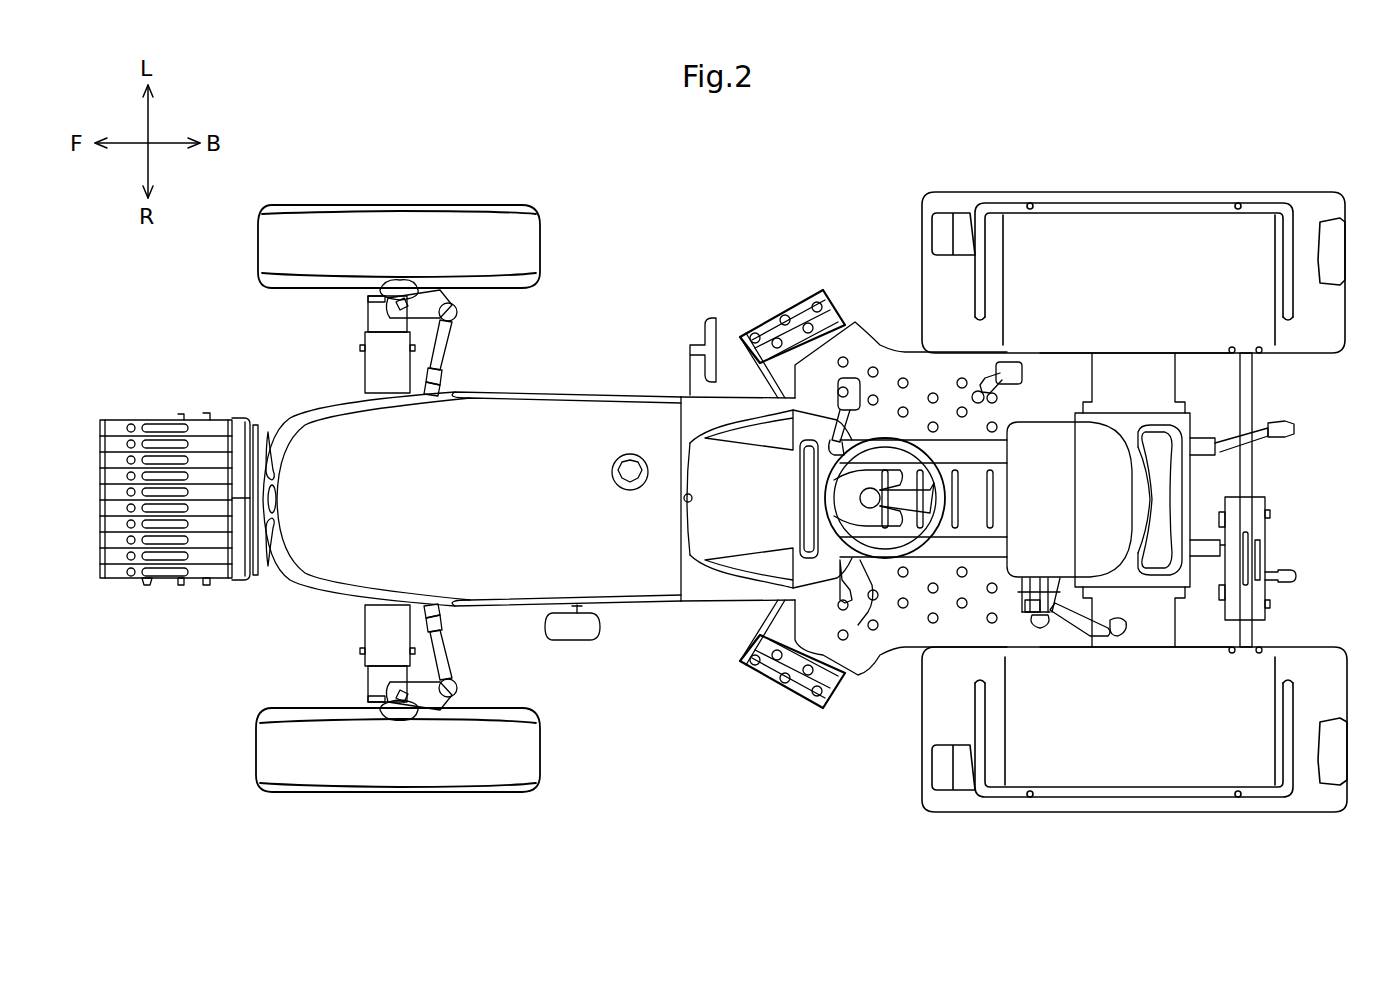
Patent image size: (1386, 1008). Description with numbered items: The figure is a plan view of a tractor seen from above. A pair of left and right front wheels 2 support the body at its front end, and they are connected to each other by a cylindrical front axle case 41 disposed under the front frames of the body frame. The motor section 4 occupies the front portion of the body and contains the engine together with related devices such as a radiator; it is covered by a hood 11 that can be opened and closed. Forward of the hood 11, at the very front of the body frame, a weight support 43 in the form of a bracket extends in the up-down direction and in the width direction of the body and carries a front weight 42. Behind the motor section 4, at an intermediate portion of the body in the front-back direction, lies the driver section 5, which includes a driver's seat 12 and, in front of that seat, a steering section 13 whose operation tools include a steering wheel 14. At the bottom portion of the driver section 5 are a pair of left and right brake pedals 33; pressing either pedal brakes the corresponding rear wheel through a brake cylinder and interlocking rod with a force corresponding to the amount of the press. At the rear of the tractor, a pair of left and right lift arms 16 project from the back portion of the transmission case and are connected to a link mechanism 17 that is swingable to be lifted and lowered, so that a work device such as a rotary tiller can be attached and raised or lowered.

The front wheels 2 is at (448, 205).
The motor section 4 is at (572, 392).
The driver section 5 is at (868, 266).
The hood 11 is at (487, 590).
The driver's seat 12 is at (1052, 440).
The steering section 13 is at (892, 406).
The steering wheel 14 is at (872, 598).
The lift arms 16 is at (1250, 432).
The link mechanism 17 is at (1314, 406).
The brake pedals 33 is at (870, 400).
The front axle case 41 is at (372, 372).
The front weight 42 is at (110, 425).
The weight support 43 is at (254, 424).